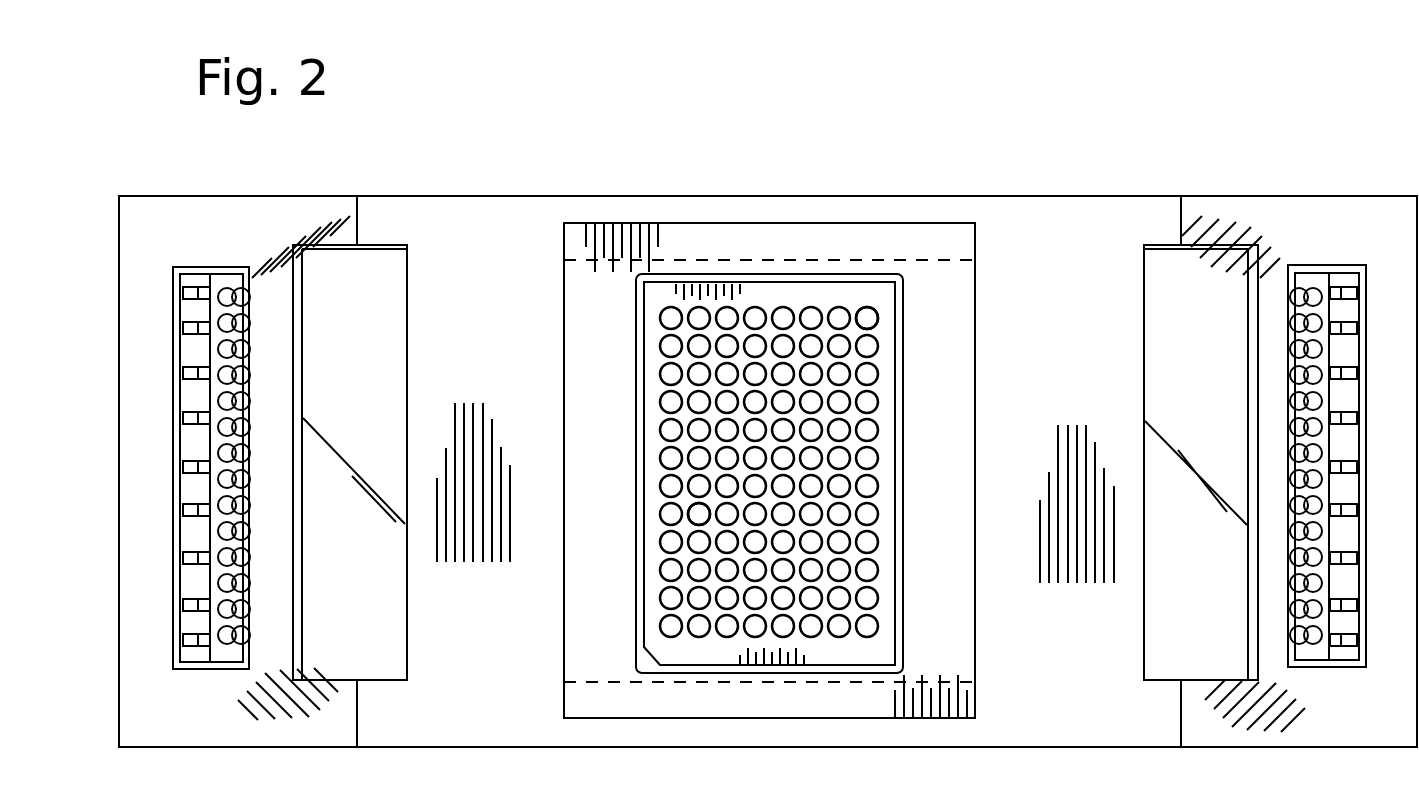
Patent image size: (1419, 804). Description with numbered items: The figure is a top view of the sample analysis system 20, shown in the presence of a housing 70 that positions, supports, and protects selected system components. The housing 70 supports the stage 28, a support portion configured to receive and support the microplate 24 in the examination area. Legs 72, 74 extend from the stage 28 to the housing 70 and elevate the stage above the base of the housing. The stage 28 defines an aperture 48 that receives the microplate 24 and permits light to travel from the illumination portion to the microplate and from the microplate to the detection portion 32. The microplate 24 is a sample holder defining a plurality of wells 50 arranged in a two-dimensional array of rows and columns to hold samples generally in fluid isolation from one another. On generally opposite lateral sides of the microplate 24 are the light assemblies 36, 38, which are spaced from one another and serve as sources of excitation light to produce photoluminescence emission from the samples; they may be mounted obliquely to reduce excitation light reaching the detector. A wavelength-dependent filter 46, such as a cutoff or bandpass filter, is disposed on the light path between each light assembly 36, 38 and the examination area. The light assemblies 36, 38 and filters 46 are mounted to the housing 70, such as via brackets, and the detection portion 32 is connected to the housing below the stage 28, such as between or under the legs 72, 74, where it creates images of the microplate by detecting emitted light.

The sample analysis system 20 is at (504, 136).
The housing 70 is at (437, 194).
The light assembly 36 is at (222, 260).
The light assembly 38 is at (1328, 260).
The wavelength-dependent filter 46 is at (407, 322).
The stage 28 is at (731, 470).
The leg 74 is at (575, 262).
The leg 72 is at (576, 680).
The detection portion 32 is at (962, 362).
The microplate 24 is at (631, 373).
The aperture 48 is at (888, 327).
The well 50 is at (697, 512).